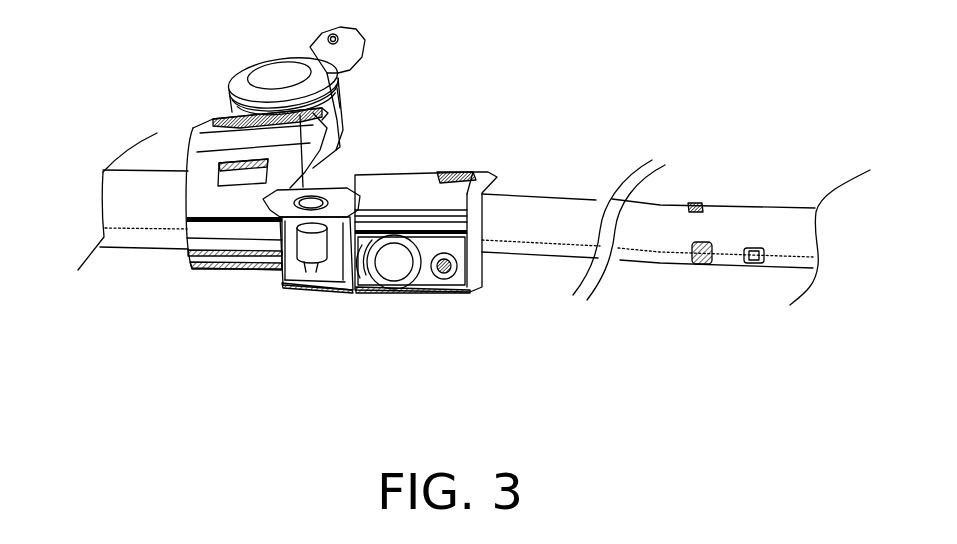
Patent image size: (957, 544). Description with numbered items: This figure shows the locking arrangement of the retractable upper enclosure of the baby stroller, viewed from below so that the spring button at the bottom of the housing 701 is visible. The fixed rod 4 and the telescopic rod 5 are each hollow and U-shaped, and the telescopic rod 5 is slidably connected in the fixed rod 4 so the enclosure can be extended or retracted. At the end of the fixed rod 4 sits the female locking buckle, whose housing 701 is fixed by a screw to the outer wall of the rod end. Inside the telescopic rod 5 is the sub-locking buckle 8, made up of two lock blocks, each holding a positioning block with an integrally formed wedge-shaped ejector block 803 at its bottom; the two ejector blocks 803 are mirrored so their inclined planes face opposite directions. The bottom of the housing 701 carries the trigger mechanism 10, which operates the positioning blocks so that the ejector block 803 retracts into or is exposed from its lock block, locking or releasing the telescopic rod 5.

The fixed rod 4 is at (163, 185).
The telescopic rod 5 is at (728, 218).
The sub-locking buckle 8 is at (704, 268).
The wedge-shaped ejector block 803 is at (762, 265).
The housing 701 is at (388, 182).
The trigger mechanism 10 is at (395, 267).